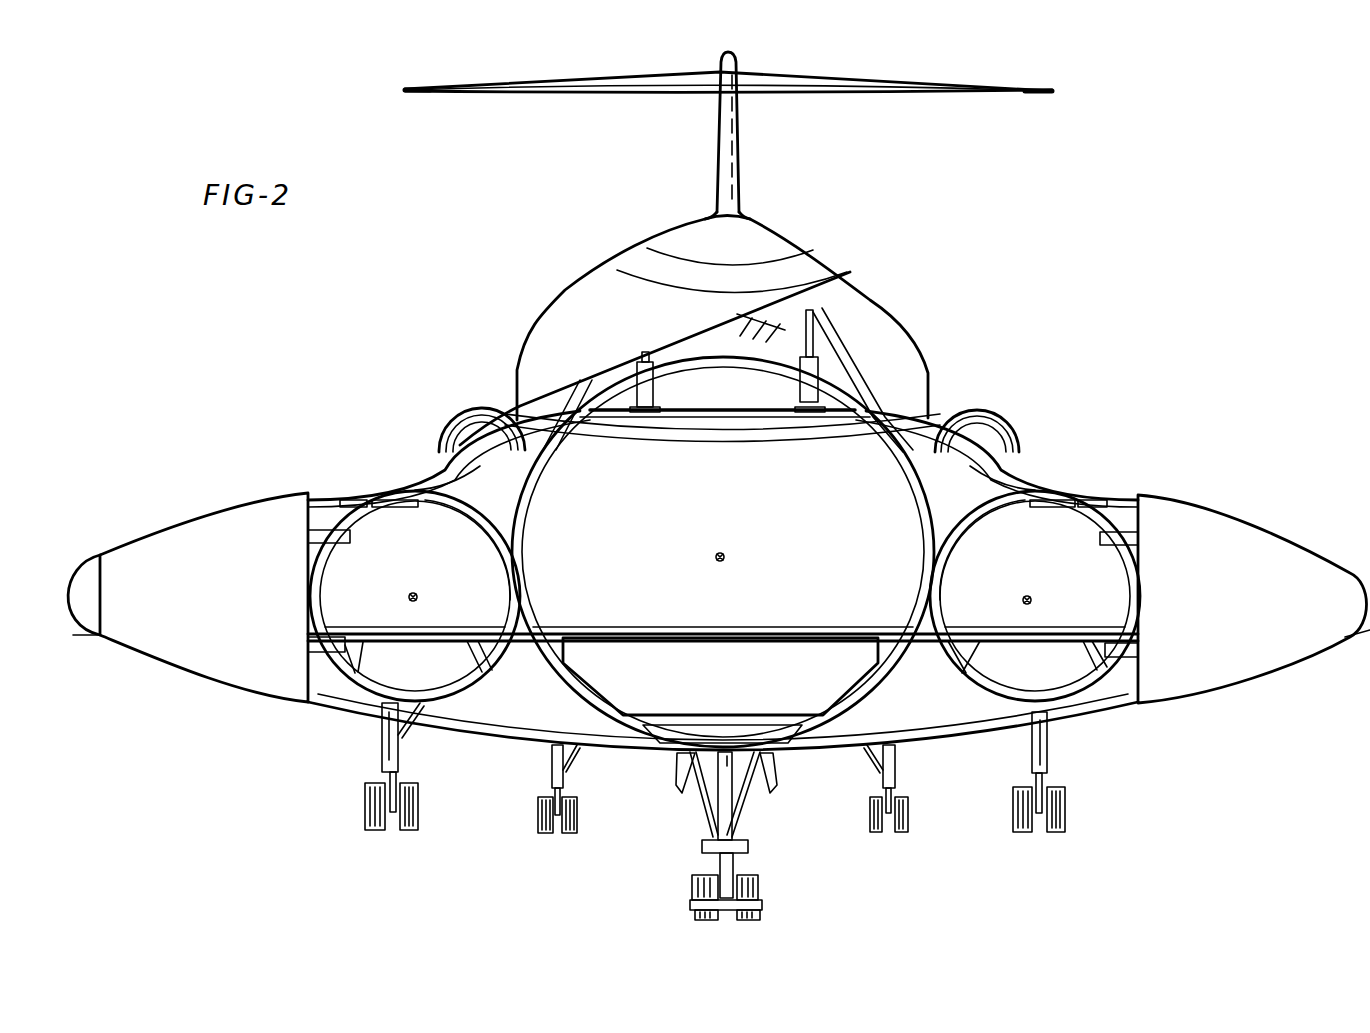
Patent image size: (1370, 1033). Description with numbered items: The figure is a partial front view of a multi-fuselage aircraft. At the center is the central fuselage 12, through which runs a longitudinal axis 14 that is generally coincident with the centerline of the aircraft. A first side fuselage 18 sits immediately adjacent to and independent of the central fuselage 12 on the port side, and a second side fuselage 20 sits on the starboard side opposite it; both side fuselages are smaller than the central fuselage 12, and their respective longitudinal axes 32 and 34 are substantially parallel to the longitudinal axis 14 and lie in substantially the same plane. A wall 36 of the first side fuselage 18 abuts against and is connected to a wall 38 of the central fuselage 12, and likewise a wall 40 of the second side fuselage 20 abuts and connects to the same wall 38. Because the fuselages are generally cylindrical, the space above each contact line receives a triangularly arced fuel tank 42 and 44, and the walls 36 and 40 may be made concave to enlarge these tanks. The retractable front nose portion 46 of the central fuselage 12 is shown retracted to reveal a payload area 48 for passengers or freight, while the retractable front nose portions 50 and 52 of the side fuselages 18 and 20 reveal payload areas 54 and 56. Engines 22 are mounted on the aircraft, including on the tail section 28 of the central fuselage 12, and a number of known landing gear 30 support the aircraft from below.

The central fuselage 12 is at (831, 389).
The longitudinal axis 14 is at (724, 553).
The first side fuselage 18 is at (1052, 492).
The second side fuselage 20 is at (391, 491).
The engines 22 is at (476, 410).
The tail section 28 is at (733, 168).
The landing gear 30 is at (552, 770).
The longitudinal axis 32 is at (1033, 598).
The longitudinal axis 34 is at (416, 592).
The wall 36 is at (978, 505).
The wall 38 is at (918, 602).
The wall 40 is at (518, 598).
The fuel tank 42 is at (1020, 483).
The fuel tank 44 is at (428, 483).
The front nose portion 46 is at (580, 312).
The payload area 48 is at (640, 515).
The retractable front nose portion 50 is at (1224, 527).
The retractable front nose portion 52 is at (248, 515).
The payload area 54 is at (990, 606).
The payload area 56 is at (392, 578).